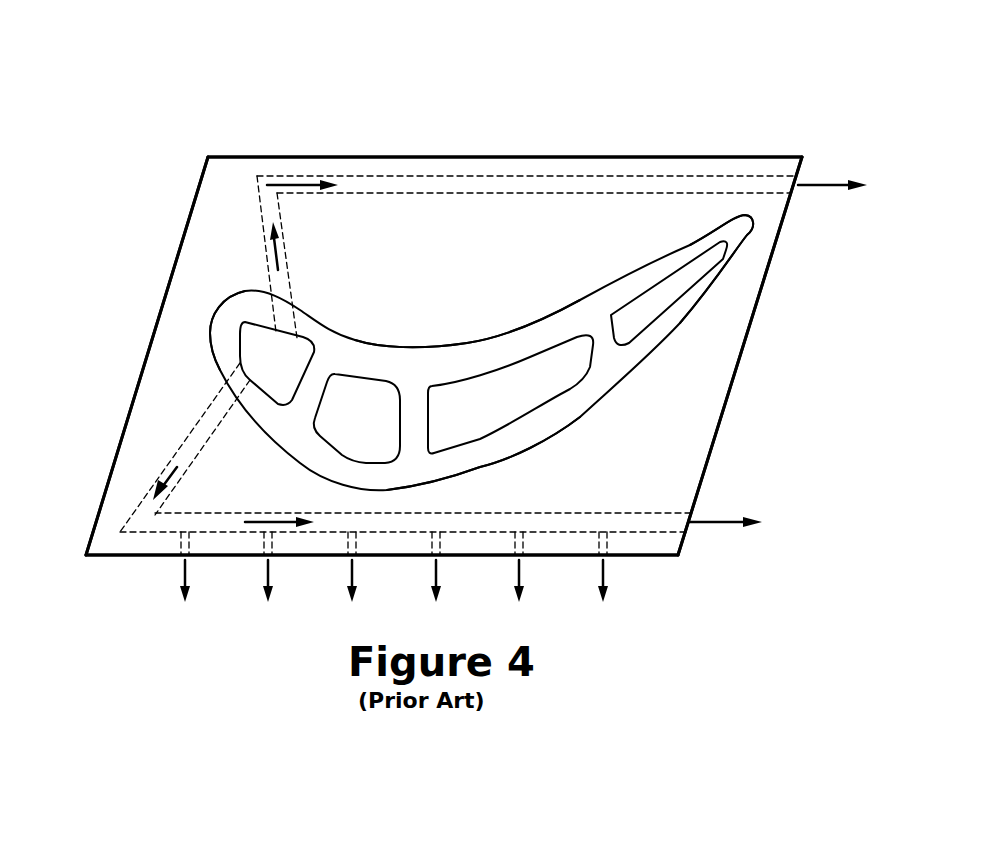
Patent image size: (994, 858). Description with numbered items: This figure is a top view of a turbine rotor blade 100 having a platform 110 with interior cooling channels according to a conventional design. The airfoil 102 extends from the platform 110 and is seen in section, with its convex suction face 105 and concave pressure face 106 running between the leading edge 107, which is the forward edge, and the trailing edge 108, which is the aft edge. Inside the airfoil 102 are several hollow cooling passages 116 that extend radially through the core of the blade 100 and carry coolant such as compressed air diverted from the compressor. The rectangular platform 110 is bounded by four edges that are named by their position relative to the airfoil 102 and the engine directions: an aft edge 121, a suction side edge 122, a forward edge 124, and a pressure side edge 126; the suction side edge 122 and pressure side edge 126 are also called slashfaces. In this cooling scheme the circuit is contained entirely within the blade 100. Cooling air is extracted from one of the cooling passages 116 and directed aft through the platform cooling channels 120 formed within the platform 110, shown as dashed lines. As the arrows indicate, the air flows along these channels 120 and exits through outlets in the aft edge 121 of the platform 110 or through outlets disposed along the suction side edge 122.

The turbine rotor blade 100 is at (118, 163).
The airfoil 102 is at (191, 325).
The convex suction face 105 is at (482, 470).
The concave pressure face 106 is at (488, 338).
The leading edge 107 is at (215, 310).
The trailing edge 108 is at (755, 222).
The platform 110 is at (405, 343).
The cooling passages 116 is at (483, 352).
The platform cooling channels 120 is at (260, 213).
The aft edge 121 is at (729, 397).
The suction side edge 122 is at (128, 557).
The forward edge 124 is at (140, 378).
The pressure side edge 126 is at (700, 157).